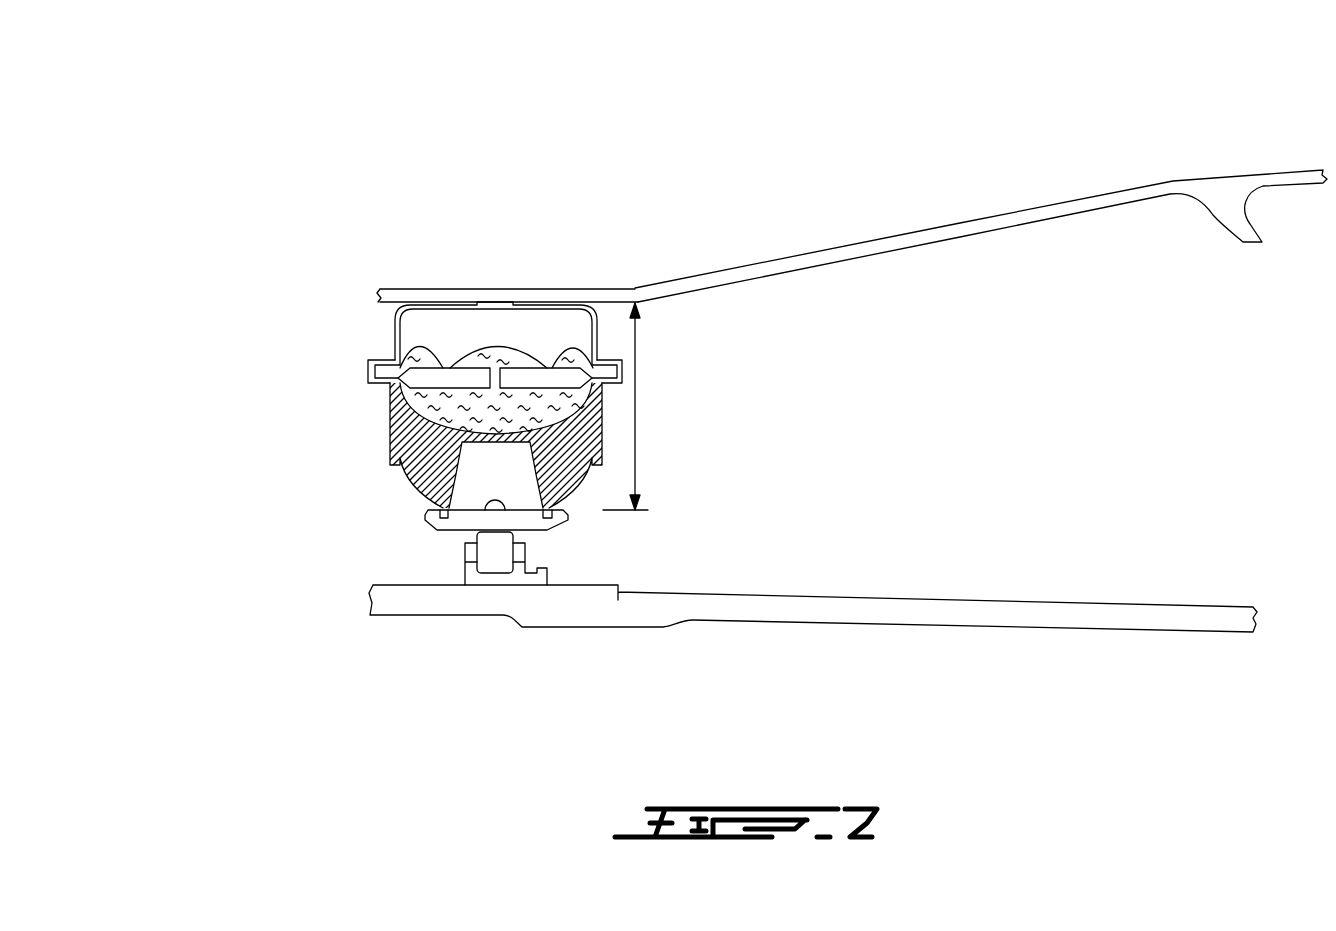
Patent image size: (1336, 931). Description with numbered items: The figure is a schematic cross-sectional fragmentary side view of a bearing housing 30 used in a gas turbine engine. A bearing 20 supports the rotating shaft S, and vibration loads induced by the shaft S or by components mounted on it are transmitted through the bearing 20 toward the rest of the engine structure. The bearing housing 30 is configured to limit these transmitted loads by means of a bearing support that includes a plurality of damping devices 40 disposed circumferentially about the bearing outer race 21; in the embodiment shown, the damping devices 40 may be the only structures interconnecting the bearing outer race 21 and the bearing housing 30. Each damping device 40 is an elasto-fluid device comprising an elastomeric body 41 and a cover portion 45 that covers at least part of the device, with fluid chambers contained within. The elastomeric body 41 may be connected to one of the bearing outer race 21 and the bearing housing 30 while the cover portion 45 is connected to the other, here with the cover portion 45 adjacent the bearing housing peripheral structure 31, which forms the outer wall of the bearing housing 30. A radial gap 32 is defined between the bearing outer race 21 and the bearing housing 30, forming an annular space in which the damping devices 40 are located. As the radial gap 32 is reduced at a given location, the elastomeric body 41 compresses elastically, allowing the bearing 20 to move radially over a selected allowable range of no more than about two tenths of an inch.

The bearing housing 30 is at (852, 165).
The bearing housing peripheral structure 31 is at (688, 282).
The radial gap 32 is at (635, 405).
The damping device 40 is at (461, 343).
The cover portion 45 is at (550, 330).
The elastomeric body 41 is at (314, 333).
The bearing outer race 21 is at (463, 518).
The bearing 20 is at (488, 550).
The shaft S is at (582, 602).